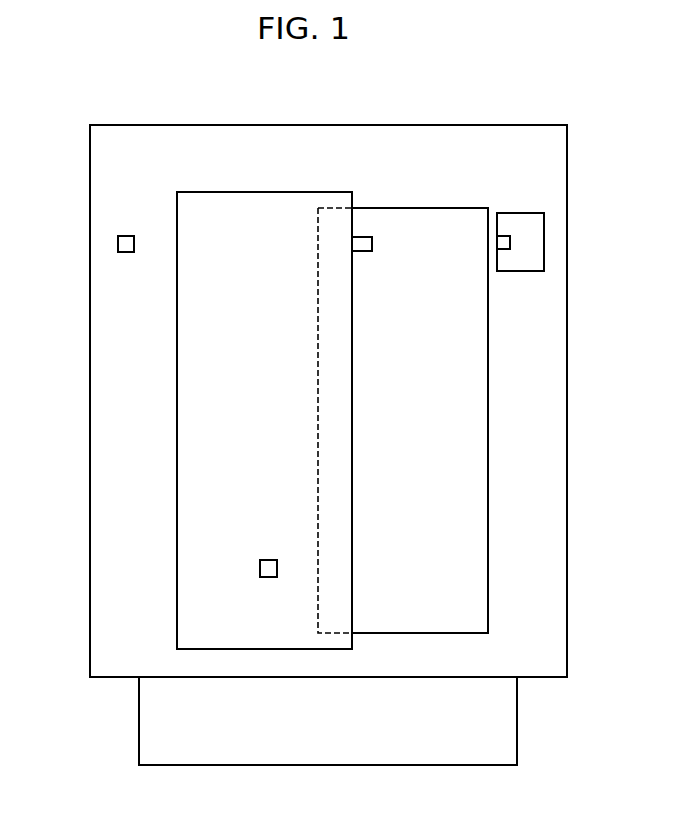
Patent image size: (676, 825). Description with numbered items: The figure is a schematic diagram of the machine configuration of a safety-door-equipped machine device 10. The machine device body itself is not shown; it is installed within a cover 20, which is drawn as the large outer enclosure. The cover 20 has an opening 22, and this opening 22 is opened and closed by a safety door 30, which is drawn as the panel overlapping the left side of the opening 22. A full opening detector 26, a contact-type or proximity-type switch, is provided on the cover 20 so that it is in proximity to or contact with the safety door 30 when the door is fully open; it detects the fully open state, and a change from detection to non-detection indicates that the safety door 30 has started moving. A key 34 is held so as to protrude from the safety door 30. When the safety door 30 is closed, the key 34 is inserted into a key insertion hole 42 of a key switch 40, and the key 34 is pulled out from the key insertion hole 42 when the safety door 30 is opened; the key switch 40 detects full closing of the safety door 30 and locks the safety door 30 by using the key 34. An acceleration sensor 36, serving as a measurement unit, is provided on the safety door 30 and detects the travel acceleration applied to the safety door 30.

The safety-door-equipped machine device 10 is at (100, 67).
The cover 20 is at (90, 280).
The opening 22 is at (487, 522).
The full opening detector 26 is at (128, 236).
The safety door 30 is at (177, 516).
The key 34 is at (373, 243).
The acceleration sensor 36 is at (270, 559).
The key switch 40 is at (512, 213).
The key insertion hole 42 is at (503, 251).